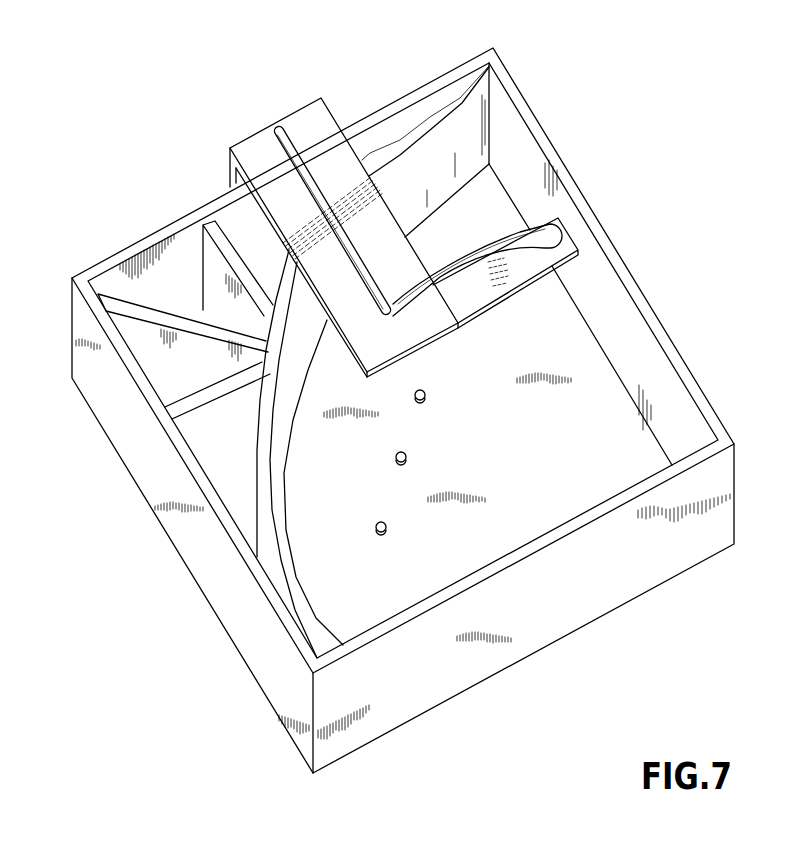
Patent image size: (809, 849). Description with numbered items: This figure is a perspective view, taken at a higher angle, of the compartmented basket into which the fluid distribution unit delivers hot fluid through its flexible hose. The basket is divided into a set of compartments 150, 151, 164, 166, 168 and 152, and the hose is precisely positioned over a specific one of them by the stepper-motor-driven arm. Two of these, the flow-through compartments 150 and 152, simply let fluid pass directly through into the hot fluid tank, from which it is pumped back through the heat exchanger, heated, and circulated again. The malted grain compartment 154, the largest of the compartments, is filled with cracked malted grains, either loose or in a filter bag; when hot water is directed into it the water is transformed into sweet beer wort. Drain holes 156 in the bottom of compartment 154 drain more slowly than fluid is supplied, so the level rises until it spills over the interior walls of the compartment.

The flow-through compartment 150 is at (373, 137).
The compartment 151 is at (247, 230).
The flow-through compartment 152 is at (247, 531).
The malted grain compartment 154 is at (565, 457).
The drain holes 156 is at (427, 397).
The compartment 164 is at (117, 288).
The compartment 166 is at (157, 377).
The compartment 168 is at (197, 439).